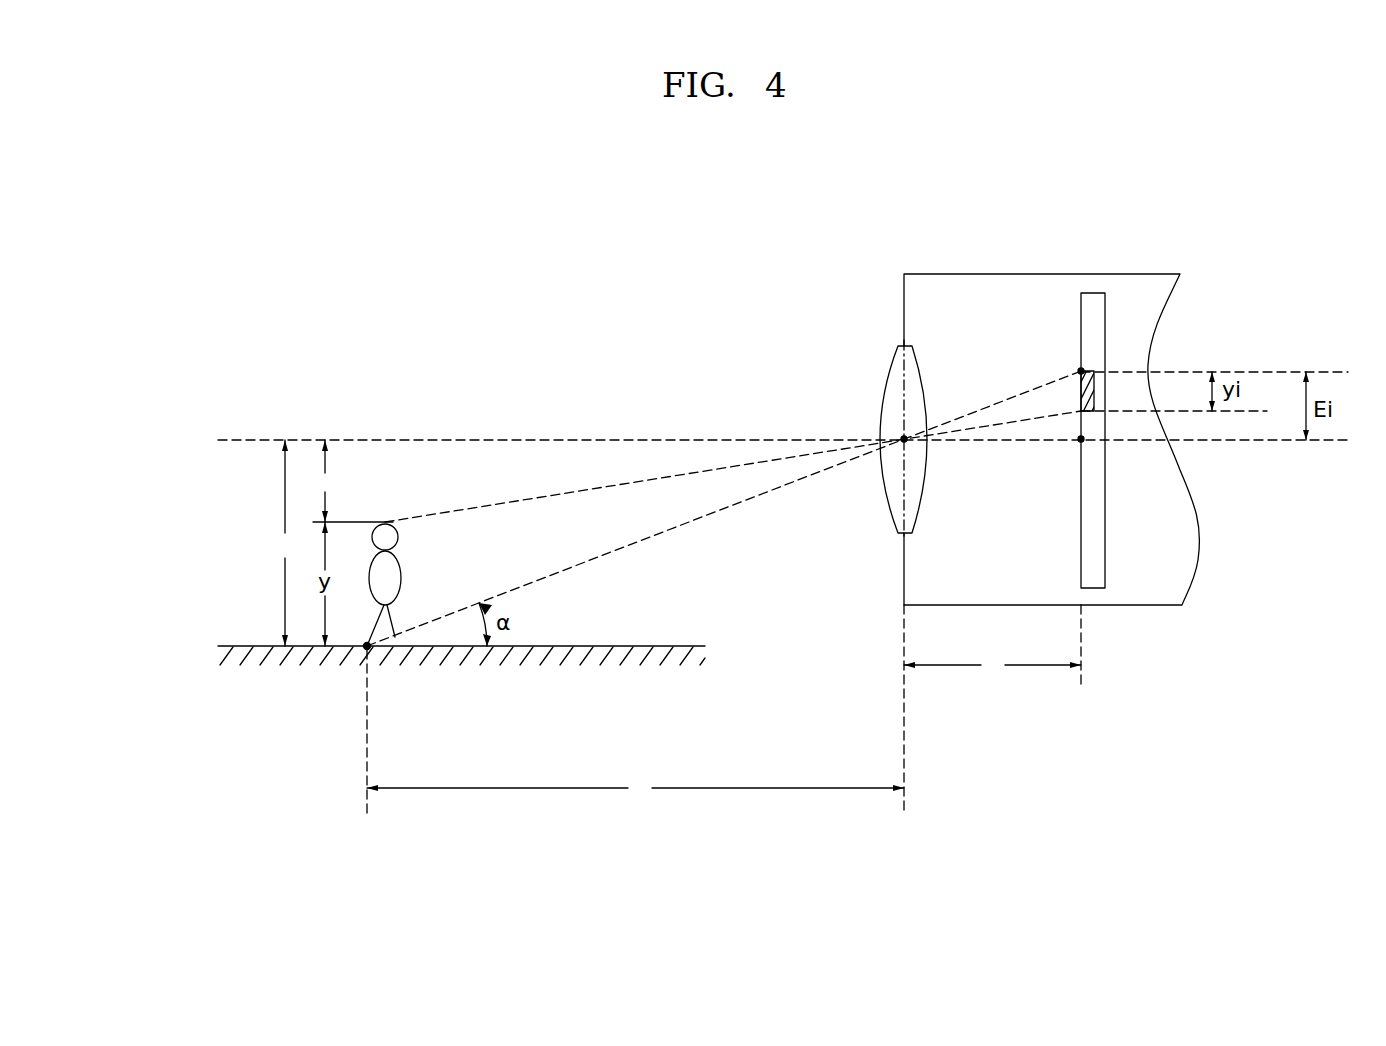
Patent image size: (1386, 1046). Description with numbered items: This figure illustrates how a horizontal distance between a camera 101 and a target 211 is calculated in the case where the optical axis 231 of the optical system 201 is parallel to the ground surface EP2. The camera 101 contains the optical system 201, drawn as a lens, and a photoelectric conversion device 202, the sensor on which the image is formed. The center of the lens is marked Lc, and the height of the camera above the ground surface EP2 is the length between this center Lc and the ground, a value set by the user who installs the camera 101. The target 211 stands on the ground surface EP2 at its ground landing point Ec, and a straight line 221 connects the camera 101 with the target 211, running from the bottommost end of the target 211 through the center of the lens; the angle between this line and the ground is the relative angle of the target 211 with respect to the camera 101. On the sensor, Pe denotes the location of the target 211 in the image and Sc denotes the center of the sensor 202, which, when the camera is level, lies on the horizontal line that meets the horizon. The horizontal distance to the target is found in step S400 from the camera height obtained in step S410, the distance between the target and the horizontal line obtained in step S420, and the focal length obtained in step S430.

The camera 101 is at (961, 274).
The optical system 201 is at (887, 378).
The photoelectric conversion device 202 is at (1093, 293).
The target 211 is at (386, 522).
The straight line 221 is at (674, 528).
The optical axis 231 is at (772, 404).
The ground surface EP2 is at (250, 650).
The ground landing point Ec is at (367, 650).
The center of the optical system Lc is at (903, 439).
The location of the target in the image Pe is at (1081, 371).
The center of the sensor Sc is at (1081, 441).
The horizontal distance calculation step S400 is at (565, 790).
The camera height step S410 is at (285, 483).
The target-to-horizontal-line distance step S420 is at (327, 460).
The focal length step S430 is at (966, 667).